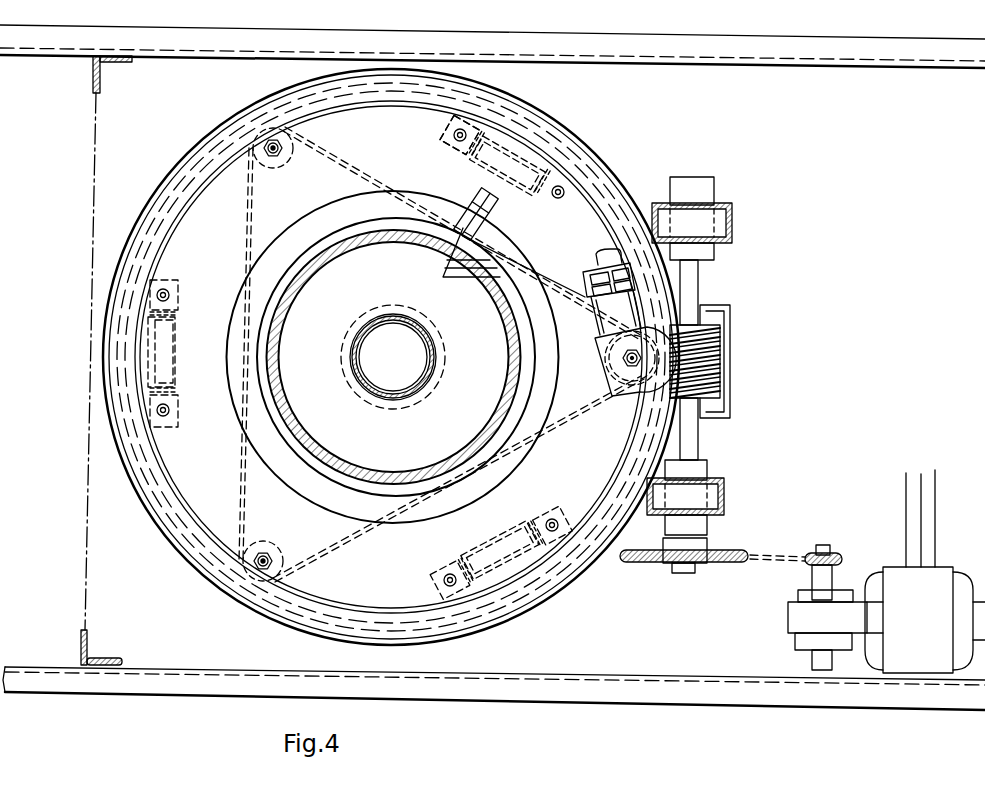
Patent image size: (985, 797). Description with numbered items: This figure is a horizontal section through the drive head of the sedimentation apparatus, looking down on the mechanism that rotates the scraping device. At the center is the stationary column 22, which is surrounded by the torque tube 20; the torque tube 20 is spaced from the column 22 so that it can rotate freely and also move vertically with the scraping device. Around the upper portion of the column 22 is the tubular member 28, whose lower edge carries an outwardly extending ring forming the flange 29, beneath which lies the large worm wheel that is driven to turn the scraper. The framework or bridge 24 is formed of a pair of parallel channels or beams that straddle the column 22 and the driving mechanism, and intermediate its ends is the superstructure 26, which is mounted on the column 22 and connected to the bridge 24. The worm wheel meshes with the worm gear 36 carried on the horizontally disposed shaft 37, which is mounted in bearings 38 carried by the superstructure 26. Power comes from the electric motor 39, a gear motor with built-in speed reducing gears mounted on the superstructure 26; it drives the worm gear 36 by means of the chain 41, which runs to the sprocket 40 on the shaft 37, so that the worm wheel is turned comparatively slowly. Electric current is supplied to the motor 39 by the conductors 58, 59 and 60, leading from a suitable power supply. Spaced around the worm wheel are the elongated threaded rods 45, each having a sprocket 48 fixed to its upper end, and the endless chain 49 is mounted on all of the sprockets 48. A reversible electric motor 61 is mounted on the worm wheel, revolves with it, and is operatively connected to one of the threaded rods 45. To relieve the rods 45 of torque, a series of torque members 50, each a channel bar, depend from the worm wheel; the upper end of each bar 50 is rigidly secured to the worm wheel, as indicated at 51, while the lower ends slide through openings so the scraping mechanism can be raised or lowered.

The torque tube 20 is at (352, 343).
The stationary column 22 is at (393, 318).
The framework or bridge 24 is at (280, 32).
The superstructure 26 is at (93, 79).
The tubular member 28 is at (286, 412).
The flange 29 is at (230, 388).
The worm gear 36 is at (722, 360).
The shaft 37 is at (698, 443).
The bearings 38 is at (722, 230).
The electric motor 39 is at (886, 609).
The sprocket 40 is at (652, 563).
The chain 41 is at (780, 556).
The threaded rod 45 is at (283, 144).
The sprocket 48 is at (279, 160).
The endless chain 49 is at (243, 457).
The torque member 50 is at (478, 152).
The securing point of bar to worm wheel 51 is at (169, 294).
The conductor 58 is at (937, 507).
The conductor 59 is at (922, 480).
The conductor 60 is at (906, 515).
The reversible electric motor 61 is at (598, 276).